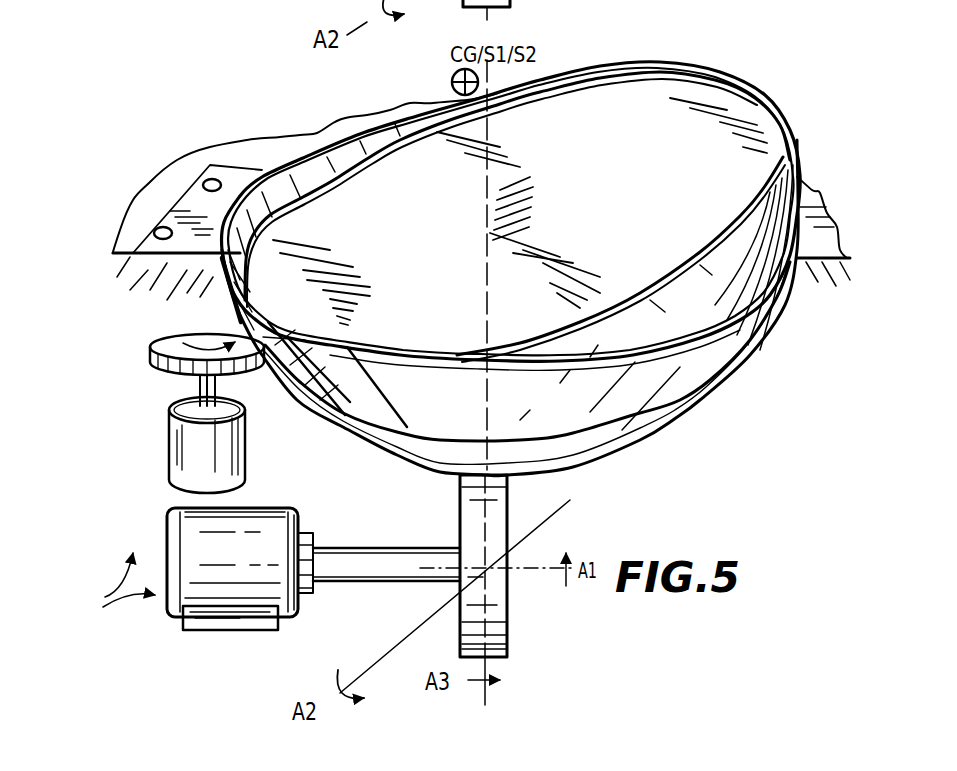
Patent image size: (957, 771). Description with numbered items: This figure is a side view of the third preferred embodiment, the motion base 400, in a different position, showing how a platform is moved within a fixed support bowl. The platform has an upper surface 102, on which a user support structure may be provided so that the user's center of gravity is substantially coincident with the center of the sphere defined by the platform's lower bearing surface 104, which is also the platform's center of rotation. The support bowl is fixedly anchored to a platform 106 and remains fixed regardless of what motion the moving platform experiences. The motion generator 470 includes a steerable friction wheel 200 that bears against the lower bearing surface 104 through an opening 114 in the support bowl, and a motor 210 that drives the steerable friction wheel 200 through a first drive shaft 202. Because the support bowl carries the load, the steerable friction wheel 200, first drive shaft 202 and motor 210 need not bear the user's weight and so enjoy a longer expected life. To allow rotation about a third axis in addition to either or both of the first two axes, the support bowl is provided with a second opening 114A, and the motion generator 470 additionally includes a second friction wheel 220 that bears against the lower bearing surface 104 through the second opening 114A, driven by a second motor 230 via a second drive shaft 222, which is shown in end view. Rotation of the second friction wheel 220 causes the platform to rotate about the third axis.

The upper surface 102 is at (350, 152).
The lower bearing surface 104 is at (763, 227).
The platform 106 is at (148, 276).
The opening 114 is at (610, 457).
The second opening 114A is at (335, 399).
The steerable friction wheel 200 is at (507, 647).
The first drive shaft 202 is at (418, 580).
The motor 210 is at (250, 547).
The second friction wheel 220 is at (167, 345).
The second drive shaft 222 is at (200, 393).
The second motor 230 is at (177, 442).
The motion base 400 is at (611, 24).
The motion generator 470 is at (106, 585).